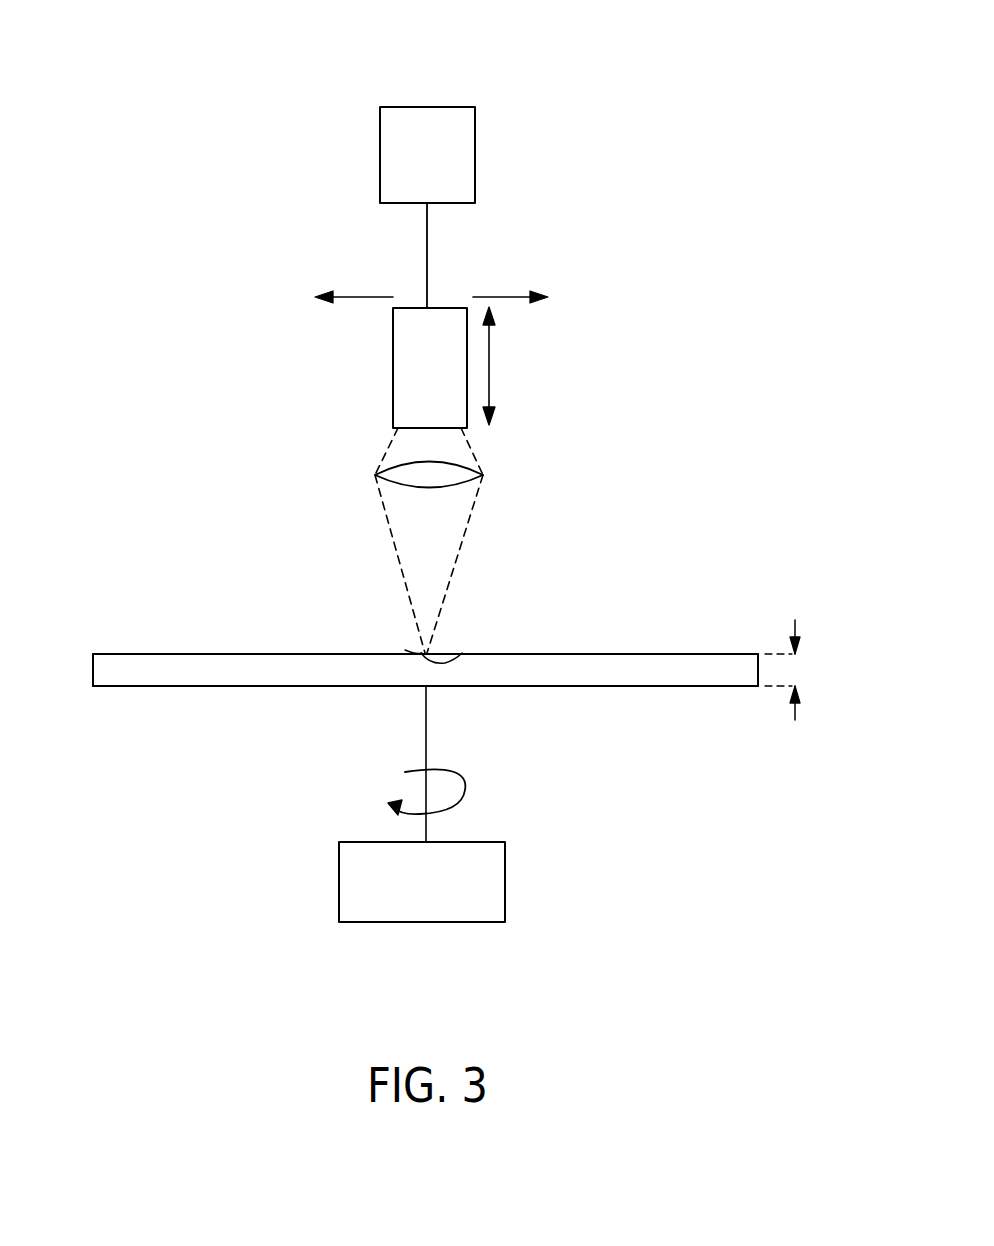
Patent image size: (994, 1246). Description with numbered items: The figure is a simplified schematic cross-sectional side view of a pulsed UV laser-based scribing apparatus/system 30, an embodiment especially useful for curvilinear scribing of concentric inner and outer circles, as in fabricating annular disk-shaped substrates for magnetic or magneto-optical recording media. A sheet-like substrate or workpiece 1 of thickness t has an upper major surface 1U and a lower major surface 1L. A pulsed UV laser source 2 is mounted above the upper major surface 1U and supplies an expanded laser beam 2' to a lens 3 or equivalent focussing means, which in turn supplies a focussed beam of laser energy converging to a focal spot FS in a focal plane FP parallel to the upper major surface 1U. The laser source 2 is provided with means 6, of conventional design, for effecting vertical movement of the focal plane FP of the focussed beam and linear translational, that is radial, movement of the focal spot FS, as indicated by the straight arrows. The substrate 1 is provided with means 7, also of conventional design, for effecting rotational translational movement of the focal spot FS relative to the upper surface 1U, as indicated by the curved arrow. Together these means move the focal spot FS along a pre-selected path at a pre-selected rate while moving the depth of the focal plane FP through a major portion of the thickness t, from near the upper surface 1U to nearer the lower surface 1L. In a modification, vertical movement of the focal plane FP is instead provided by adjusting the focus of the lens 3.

The laser-scribing apparatus/system 30 is at (597, 108).
The means for effecting vertical and linear translational movement 6 is at (436, 171).
The pulsed UV laser source 2 is at (431, 359).
The expanded laser beam 2' is at (470, 438).
The lens 3 is at (484, 475).
The focal spot FS is at (418, 651).
The focal plane FP is at (455, 653).
The sheet-like substrate 1 is at (651, 676).
The upper major surface 1U is at (727, 653).
The lower major surface 1L is at (733, 687).
The thickness t is at (783, 670).
The means for effecting rotational translational movement 7 is at (434, 901).